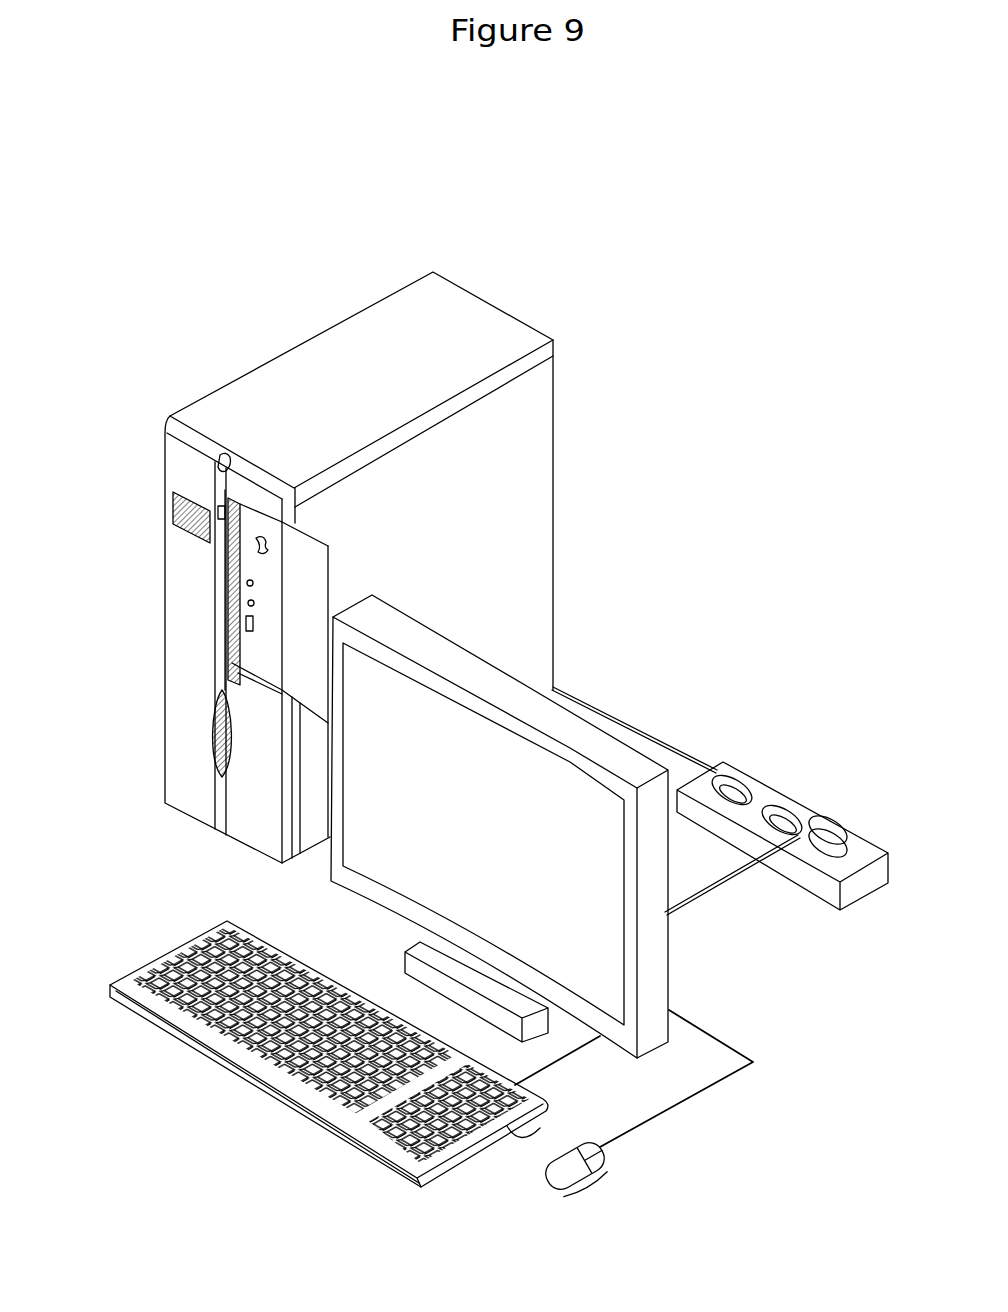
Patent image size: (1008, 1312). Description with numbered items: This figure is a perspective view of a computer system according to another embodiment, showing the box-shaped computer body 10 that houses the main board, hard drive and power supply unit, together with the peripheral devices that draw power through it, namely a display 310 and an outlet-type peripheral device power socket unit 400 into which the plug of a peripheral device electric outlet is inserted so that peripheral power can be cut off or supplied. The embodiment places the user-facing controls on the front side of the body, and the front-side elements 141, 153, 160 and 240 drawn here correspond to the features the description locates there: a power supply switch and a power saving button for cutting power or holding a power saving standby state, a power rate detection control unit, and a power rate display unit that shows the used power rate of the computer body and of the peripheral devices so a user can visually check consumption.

The computer main body 10 is at (462, 308).
The front panel 141 is at (172, 474).
The ventilation grille 153 is at (173, 532).
The front door 160 is at (258, 545).
The knob 240 is at (212, 733).
The monitor 310 is at (563, 703).
The peripheral unit 400 is at (773, 788).